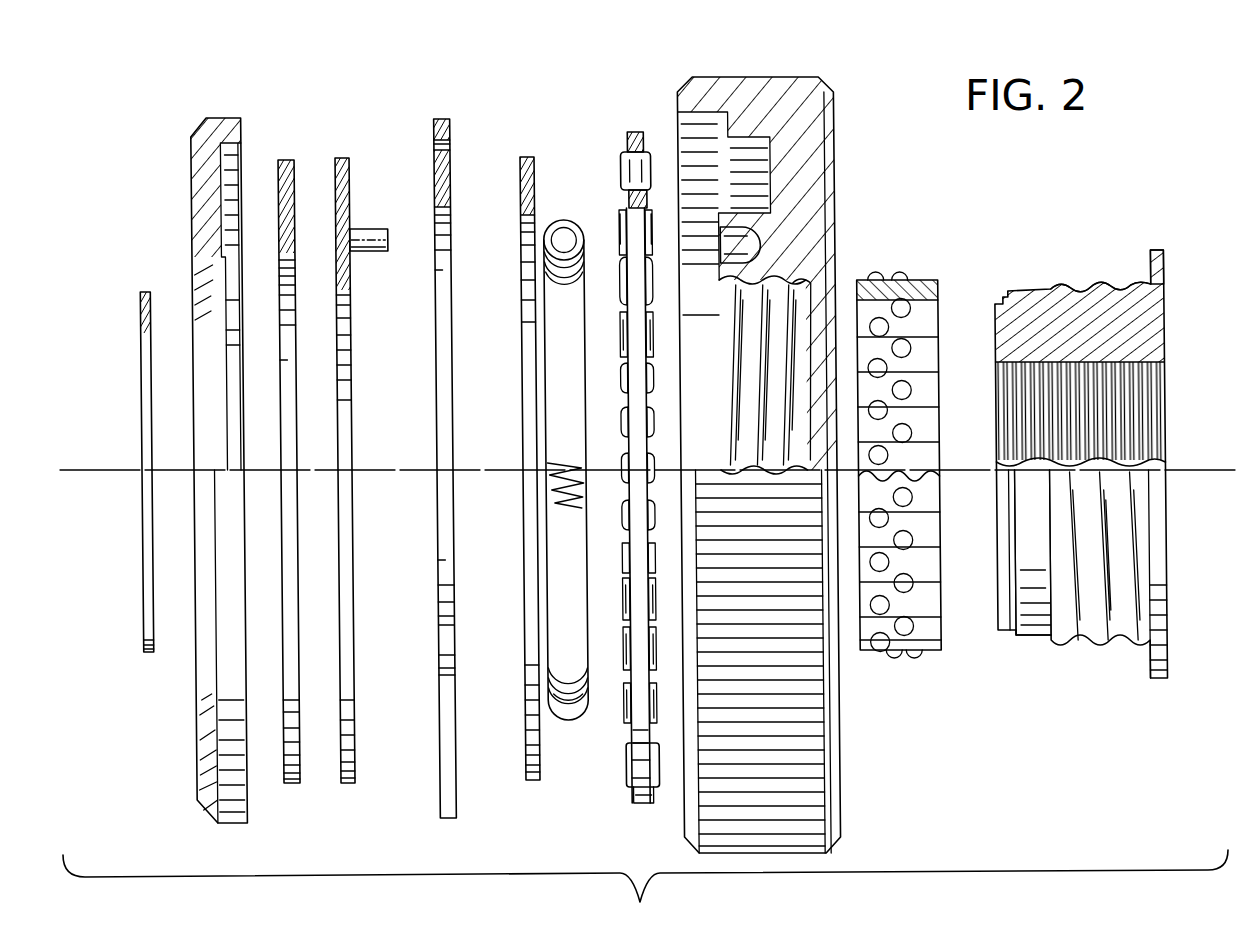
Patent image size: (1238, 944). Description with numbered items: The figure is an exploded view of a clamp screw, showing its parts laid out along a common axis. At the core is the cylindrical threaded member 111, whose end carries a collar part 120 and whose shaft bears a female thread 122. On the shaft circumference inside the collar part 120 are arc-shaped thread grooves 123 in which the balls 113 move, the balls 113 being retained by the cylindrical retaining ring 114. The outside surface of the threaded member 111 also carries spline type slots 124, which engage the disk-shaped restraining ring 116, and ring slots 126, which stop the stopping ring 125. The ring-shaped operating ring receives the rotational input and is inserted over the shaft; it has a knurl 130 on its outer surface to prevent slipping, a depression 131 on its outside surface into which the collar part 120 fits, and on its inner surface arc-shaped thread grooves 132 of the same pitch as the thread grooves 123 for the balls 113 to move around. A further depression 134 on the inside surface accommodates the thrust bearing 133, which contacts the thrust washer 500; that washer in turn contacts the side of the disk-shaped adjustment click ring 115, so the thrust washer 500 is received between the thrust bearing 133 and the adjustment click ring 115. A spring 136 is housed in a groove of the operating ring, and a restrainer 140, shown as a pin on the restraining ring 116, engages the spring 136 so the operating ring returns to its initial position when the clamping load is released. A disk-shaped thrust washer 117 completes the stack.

The threaded member 111 is at (1116, 452).
The balls 113 is at (918, 471).
The retaining ring 114 is at (930, 650).
The adjustment click ring 115 is at (438, 119).
The restraining ring 116 is at (342, 160).
The thrust washer 117 is at (285, 160).
The collar part 120 is at (1160, 251).
The female thread 122 is at (1163, 390).
The thread grooves 123 is at (1085, 289).
The spline type slots 124 is at (1048, 642).
The stopping ring 125 is at (143, 655).
The ring slots 126 is at (1008, 635).
The knurl 130 is at (790, 442).
The depression 131 is at (813, 263).
The thread grooves 132 is at (817, 286).
The thrust bearing 133 is at (636, 132).
The depression 134 is at (745, 158).
The spring 136 is at (560, 222).
The restrainer 140 is at (366, 230).
The thrust washer 500 is at (527, 157).